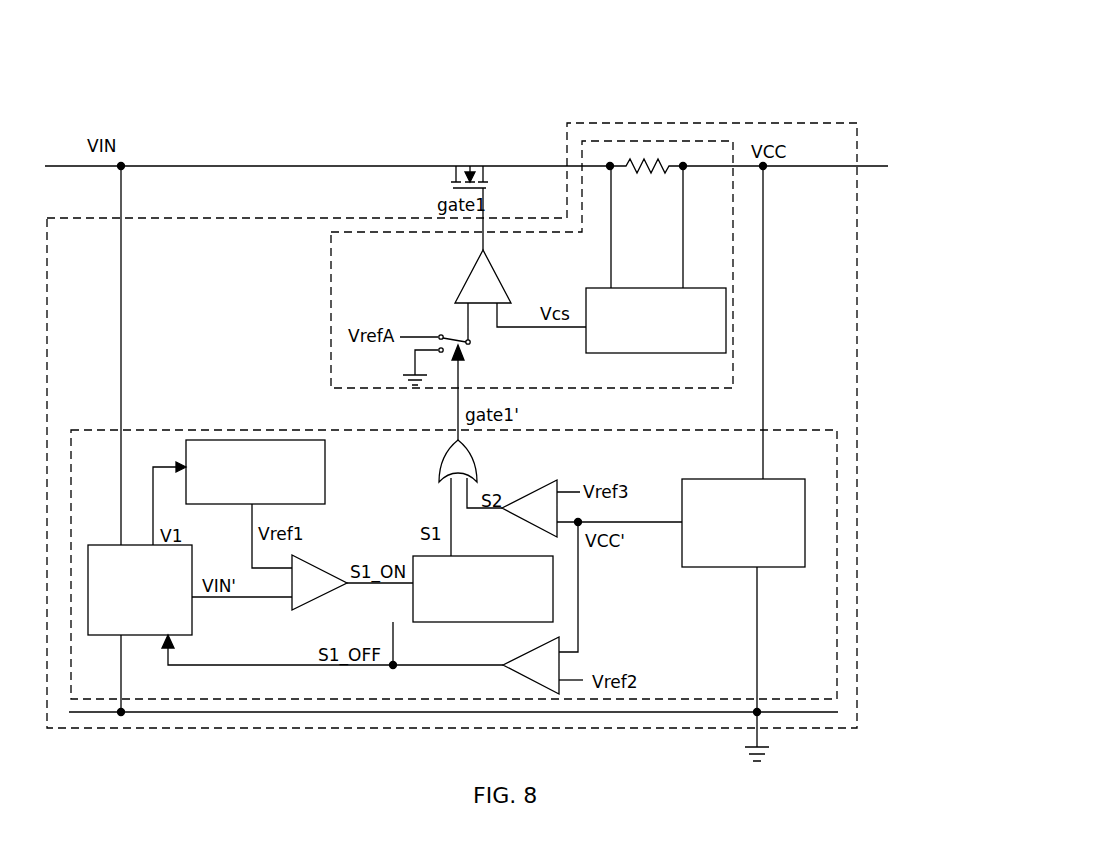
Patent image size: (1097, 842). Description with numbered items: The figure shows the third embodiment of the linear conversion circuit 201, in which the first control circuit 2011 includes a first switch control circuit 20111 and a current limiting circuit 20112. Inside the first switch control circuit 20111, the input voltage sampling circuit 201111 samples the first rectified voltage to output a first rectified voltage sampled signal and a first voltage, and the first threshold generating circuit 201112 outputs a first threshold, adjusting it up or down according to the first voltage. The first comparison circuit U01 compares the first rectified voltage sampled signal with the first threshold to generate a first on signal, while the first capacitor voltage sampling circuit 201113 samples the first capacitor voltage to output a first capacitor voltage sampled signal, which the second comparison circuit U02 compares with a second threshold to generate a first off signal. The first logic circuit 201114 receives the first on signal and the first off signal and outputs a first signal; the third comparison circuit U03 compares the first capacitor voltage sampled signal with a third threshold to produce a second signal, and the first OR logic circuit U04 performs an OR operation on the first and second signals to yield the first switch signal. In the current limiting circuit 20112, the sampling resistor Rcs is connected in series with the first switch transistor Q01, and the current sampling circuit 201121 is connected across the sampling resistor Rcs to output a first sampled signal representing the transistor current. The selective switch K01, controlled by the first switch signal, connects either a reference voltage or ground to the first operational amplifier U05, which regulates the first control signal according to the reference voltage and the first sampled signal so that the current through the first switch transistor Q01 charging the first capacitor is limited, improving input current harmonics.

The linear conversion circuit 201 is at (827, 74).
The first control circuit 2011 is at (857, 345).
The first switch control circuit 20111 is at (147, 430).
The current limiting circuit 20112 is at (331, 282).
The input voltage sampling circuit 201111 is at (118, 626).
The first threshold generating circuit 201112 is at (233, 500).
The first capacitor voltage sampling circuit 201113 is at (721, 559).
The first logic circuit 201114 is at (458, 601).
The current sampling circuit 201121 is at (634, 350).
The first switch transistor Q01 is at (469, 194).
The sampling resistor Rcs is at (647, 179).
The first comparison circuit U01 is at (320, 576).
The second comparison circuit U02 is at (528, 670).
The third comparison circuit U03 is at (520, 502).
The first OR logic circuit U04 is at (458, 458).
The first operational amplifier U05 is at (485, 293).
The selective switch K01 is at (435, 353).